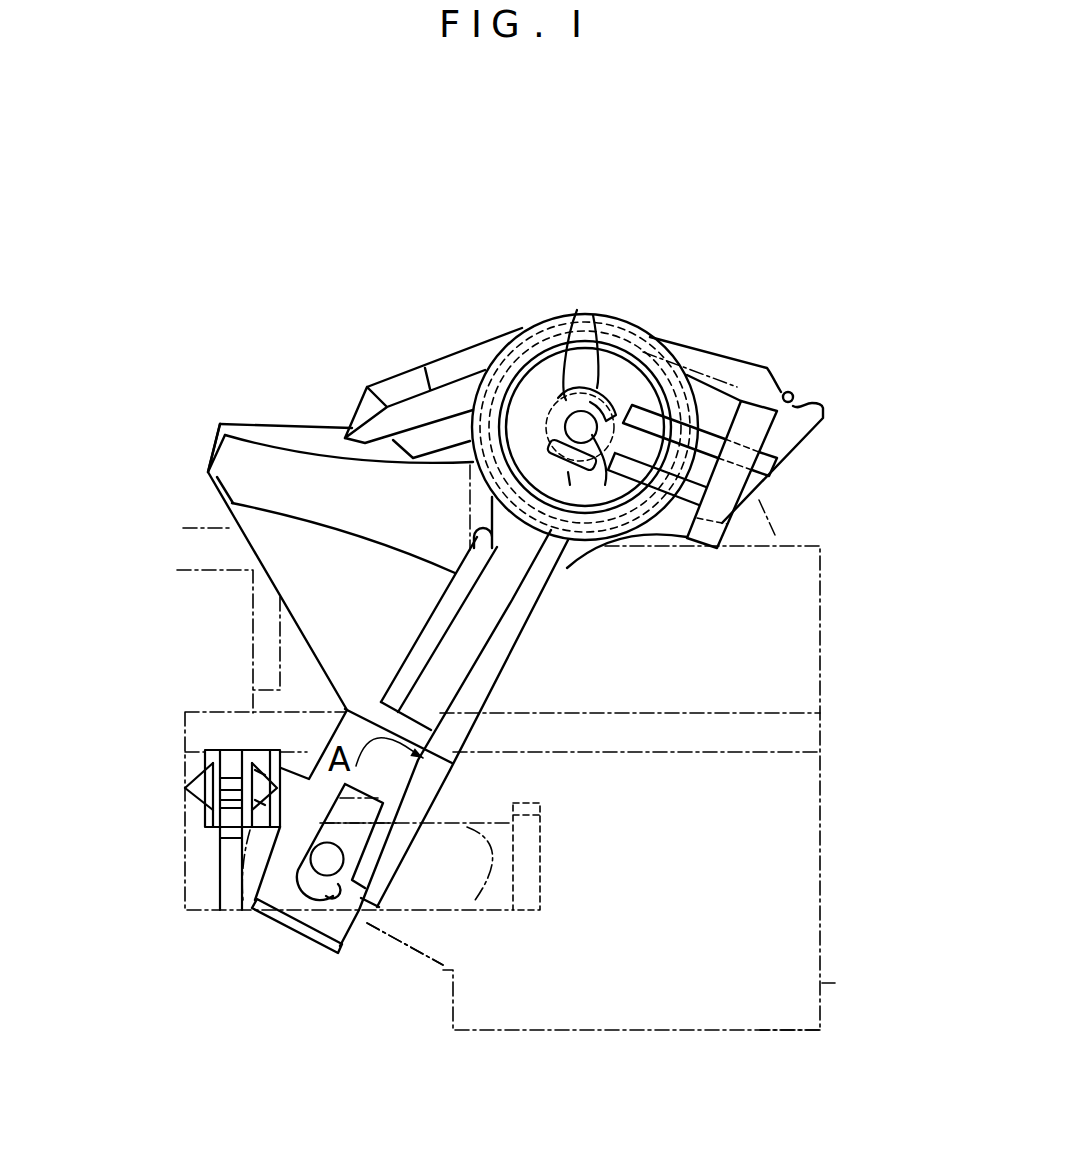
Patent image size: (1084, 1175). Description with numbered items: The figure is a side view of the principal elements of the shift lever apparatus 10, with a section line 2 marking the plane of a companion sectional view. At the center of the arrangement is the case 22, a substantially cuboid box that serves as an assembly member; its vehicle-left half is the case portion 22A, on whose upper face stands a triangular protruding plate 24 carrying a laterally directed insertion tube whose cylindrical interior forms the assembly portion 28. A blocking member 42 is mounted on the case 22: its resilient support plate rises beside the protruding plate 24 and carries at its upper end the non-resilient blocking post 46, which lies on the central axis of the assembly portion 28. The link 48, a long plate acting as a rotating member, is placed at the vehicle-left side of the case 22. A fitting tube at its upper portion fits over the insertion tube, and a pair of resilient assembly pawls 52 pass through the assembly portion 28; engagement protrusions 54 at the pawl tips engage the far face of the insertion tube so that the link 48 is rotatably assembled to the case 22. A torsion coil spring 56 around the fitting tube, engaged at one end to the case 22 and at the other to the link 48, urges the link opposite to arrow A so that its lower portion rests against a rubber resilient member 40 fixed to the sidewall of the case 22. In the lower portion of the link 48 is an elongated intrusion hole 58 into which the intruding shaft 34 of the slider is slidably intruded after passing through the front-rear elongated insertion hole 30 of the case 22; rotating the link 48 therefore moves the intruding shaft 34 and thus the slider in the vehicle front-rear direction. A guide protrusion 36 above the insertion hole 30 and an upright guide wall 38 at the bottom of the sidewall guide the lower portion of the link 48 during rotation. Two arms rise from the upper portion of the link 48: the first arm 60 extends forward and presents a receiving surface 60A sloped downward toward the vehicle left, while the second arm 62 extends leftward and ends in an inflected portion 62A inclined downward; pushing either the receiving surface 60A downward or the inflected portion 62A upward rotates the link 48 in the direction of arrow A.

The mechanism 10 is at (466, 232).
The section line 2 is at (655, 300).
The case 22 is at (822, 948).
The case portion 22A is at (822, 983).
The protruding plate 24 is at (775, 535).
The assembly portion 28 is at (548, 345).
The insertion hole 30 is at (465, 897).
The intruding shaft 34 is at (495, 849).
The guide protrusion 36 is at (493, 800).
The guide wall 38 is at (423, 947).
The resilient member 40 is at (252, 760).
The blocking member 42 is at (563, 418).
The blocking post 46 is at (498, 376).
The link 48 is at (513, 658).
The assembly pawls 52 is at (632, 400).
The engagement protrusions 54 is at (590, 395).
The torsion coil spring 56 is at (717, 387).
The intrusion hole 58 is at (358, 920).
The first arm 60 is at (312, 426).
The receiving surface 60A is at (230, 460).
The second arm 62 is at (783, 435).
The inflected portion 62A is at (705, 535).